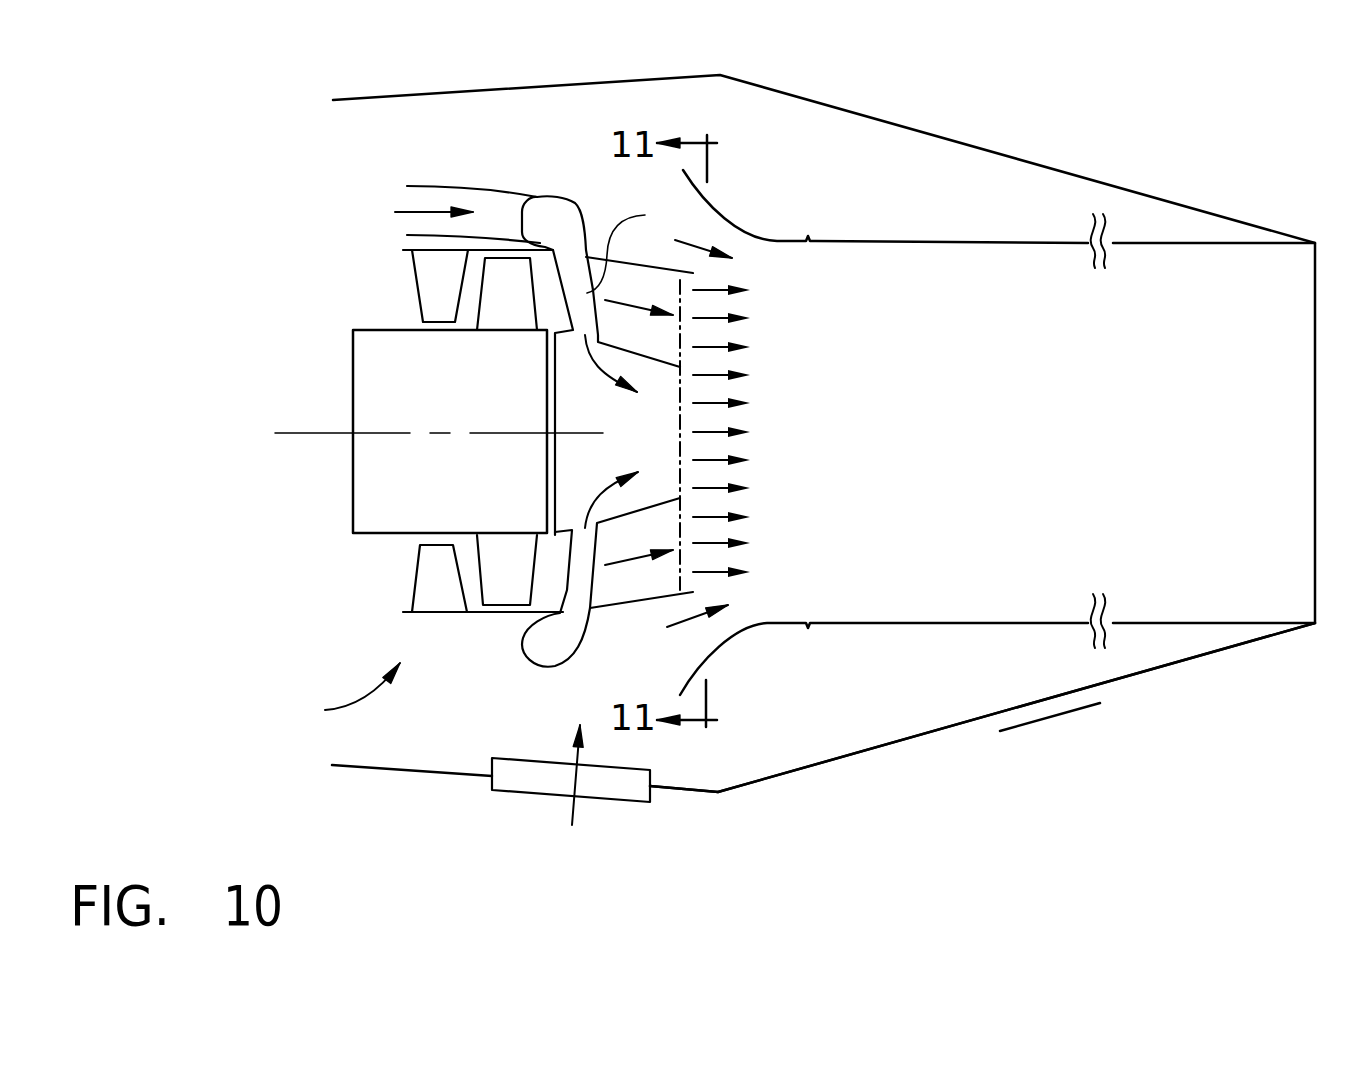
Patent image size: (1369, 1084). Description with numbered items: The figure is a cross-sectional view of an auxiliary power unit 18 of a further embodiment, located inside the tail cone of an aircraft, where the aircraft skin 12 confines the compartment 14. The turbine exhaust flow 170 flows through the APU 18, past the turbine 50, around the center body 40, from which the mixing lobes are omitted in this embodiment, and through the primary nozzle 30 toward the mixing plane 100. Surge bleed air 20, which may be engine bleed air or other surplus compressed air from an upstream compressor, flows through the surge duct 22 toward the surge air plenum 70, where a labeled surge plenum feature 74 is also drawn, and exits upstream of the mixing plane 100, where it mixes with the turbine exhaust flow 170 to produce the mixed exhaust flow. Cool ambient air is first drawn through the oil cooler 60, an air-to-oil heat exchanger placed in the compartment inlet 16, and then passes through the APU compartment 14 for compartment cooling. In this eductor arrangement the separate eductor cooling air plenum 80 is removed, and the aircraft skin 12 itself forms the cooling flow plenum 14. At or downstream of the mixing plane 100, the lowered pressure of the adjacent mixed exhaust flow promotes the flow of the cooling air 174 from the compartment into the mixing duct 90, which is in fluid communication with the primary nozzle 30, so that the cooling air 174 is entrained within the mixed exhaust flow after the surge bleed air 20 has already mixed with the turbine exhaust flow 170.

The aircraft skin 12 is at (923, 733).
The compartment 14 is at (965, 688).
The compartment inlet 16 is at (653, 785).
The auxiliary power unit 18 is at (345, 696).
The surge bleed air 20 is at (410, 210).
The surge duct 22 is at (455, 185).
The primary nozzle 30 is at (720, 215).
The center body 40 is at (587, 403).
The turbine 50 is at (503, 570).
The oil cooler 60 is at (502, 792).
The surge air plenum 70 is at (558, 220).
The flow guide vane 74 is at (635, 245).
The cooling flow plenum 80 is at (453, 727).
The mixing duct 90 is at (935, 625).
The mixing plane 100 is at (680, 400).
The turbine exhaust flow 170 is at (630, 562).
The cooling air 174 is at (567, 812).